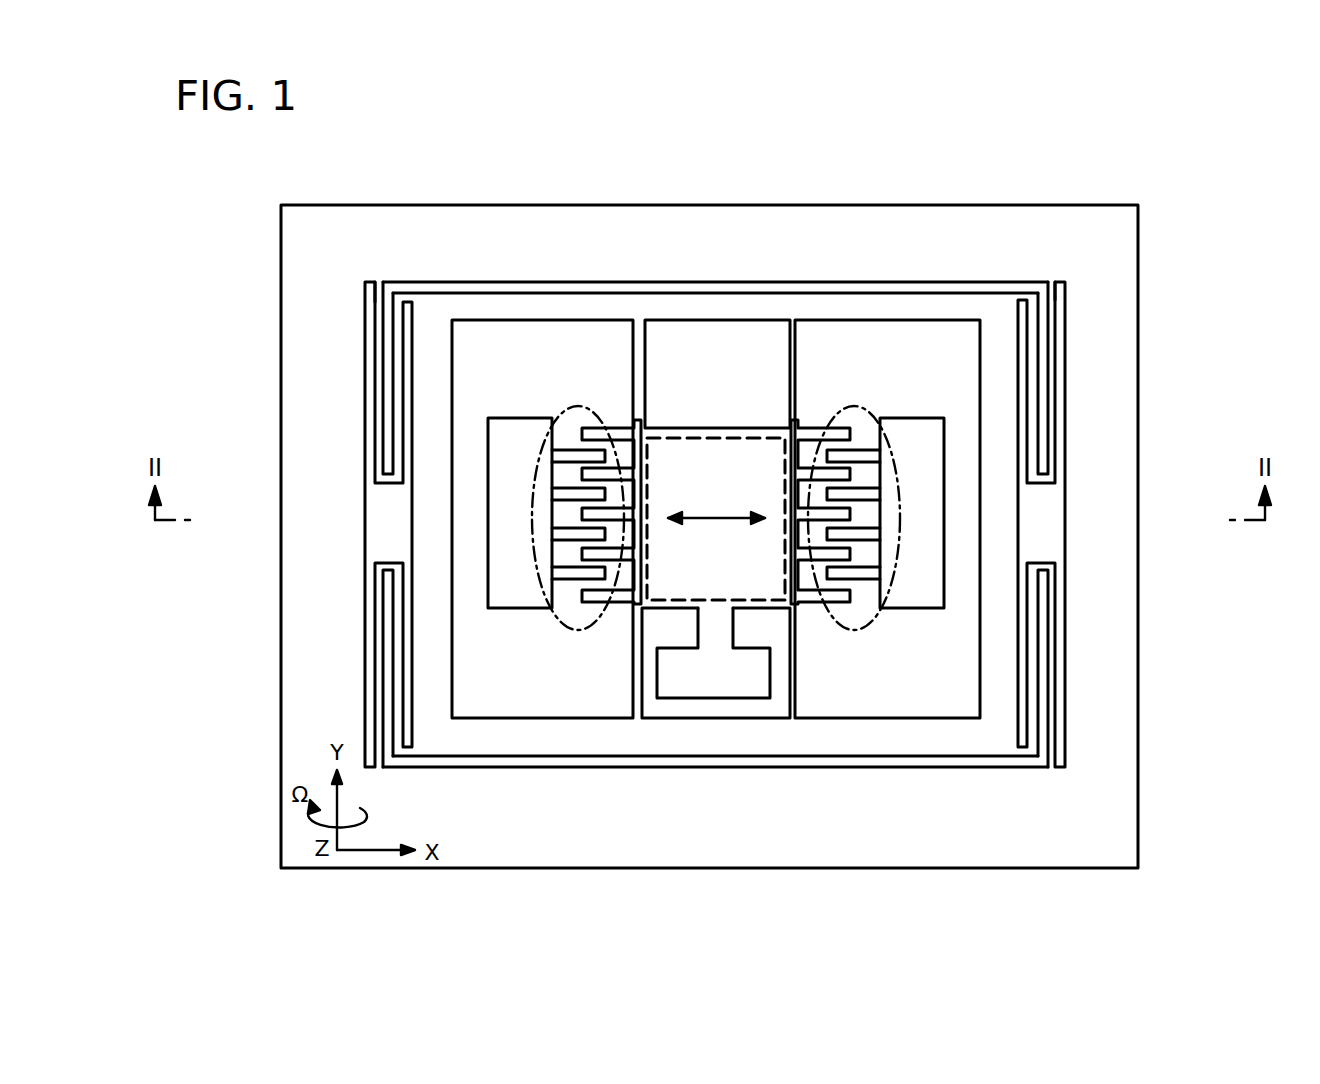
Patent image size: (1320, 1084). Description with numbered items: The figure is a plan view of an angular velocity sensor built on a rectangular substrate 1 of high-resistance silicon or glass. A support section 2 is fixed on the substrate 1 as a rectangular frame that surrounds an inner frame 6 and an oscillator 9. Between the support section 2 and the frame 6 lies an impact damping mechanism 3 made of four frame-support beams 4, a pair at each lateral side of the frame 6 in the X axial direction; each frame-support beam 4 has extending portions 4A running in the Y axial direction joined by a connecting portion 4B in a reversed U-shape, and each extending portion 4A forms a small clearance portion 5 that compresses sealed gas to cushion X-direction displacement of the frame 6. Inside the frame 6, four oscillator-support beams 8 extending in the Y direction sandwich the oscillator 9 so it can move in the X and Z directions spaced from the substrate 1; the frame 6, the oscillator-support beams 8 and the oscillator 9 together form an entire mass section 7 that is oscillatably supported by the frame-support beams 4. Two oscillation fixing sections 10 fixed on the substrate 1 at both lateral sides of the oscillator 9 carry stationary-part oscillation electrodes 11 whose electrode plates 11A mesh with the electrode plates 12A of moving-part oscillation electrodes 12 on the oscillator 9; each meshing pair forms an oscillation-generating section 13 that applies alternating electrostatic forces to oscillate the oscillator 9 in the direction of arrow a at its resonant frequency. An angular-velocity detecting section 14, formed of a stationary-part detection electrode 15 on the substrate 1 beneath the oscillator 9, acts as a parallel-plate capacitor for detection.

The substrate 1 is at (950, 682).
The support section 2 is at (1130, 262).
The impact damping mechanism 3 is at (491, 278).
The frame-support beam 4 is at (378, 330).
The extending portion 4A is at (378, 372).
The connecting portion 4B is at (373, 565).
The clearance portion 5 is at (366, 290).
The frame 6 is at (953, 306).
The entire mass section 7 is at (668, 772).
The oscillator-support beam 8 is at (640, 345).
The oscillator 9 is at (726, 450).
The oscillation fixing section 10 is at (500, 428).
The stationary-part oscillation electrode 11 is at (570, 456).
The electrode plate 11A is at (563, 540).
The moving-part oscillation electrode 12 is at (836, 432).
The electrode plate 12A is at (593, 440).
The oscillation-generating section 13 is at (889, 425).
The angular-velocity detecting section 14 is at (746, 625).
The stationary-part detection electrode 15 is at (683, 462).